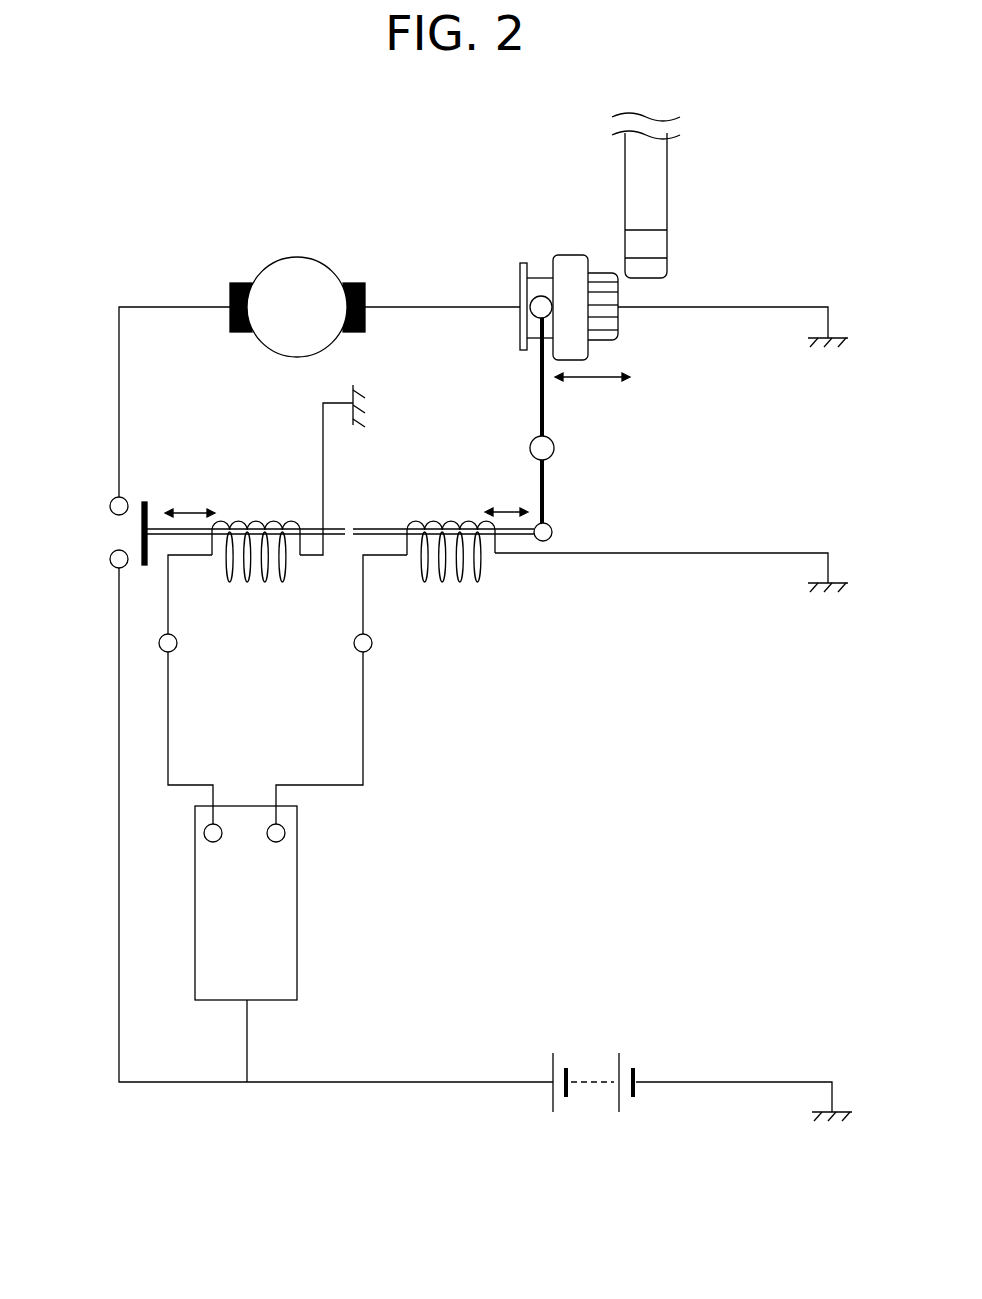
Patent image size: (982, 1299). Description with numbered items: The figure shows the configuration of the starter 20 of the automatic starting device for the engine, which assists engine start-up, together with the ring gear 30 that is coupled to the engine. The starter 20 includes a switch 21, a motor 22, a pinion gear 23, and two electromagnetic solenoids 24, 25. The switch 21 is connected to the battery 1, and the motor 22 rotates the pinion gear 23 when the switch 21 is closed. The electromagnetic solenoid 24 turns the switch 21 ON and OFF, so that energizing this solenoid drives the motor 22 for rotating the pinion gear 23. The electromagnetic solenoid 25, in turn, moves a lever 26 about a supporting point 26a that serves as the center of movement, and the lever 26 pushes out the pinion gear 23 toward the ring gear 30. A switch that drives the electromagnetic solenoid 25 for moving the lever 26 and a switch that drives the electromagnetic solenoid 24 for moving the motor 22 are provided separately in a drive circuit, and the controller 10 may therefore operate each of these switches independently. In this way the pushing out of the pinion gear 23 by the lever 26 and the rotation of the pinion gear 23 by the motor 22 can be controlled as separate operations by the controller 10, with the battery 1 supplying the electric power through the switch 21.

The battery 1 is at (583, 1103).
The controller 10 is at (297, 897).
The starter 20 is at (109, 176).
The switch 21 is at (115, 537).
The motor 22 is at (258, 263).
The pinion gear 23 is at (554, 257).
The electromagnetic solenoid 24 is at (238, 518).
The electromagnetic solenoid 25 is at (452, 517).
The lever 26 is at (539, 382).
The supporting point 26a is at (556, 450).
The ring gear 30 is at (668, 182).